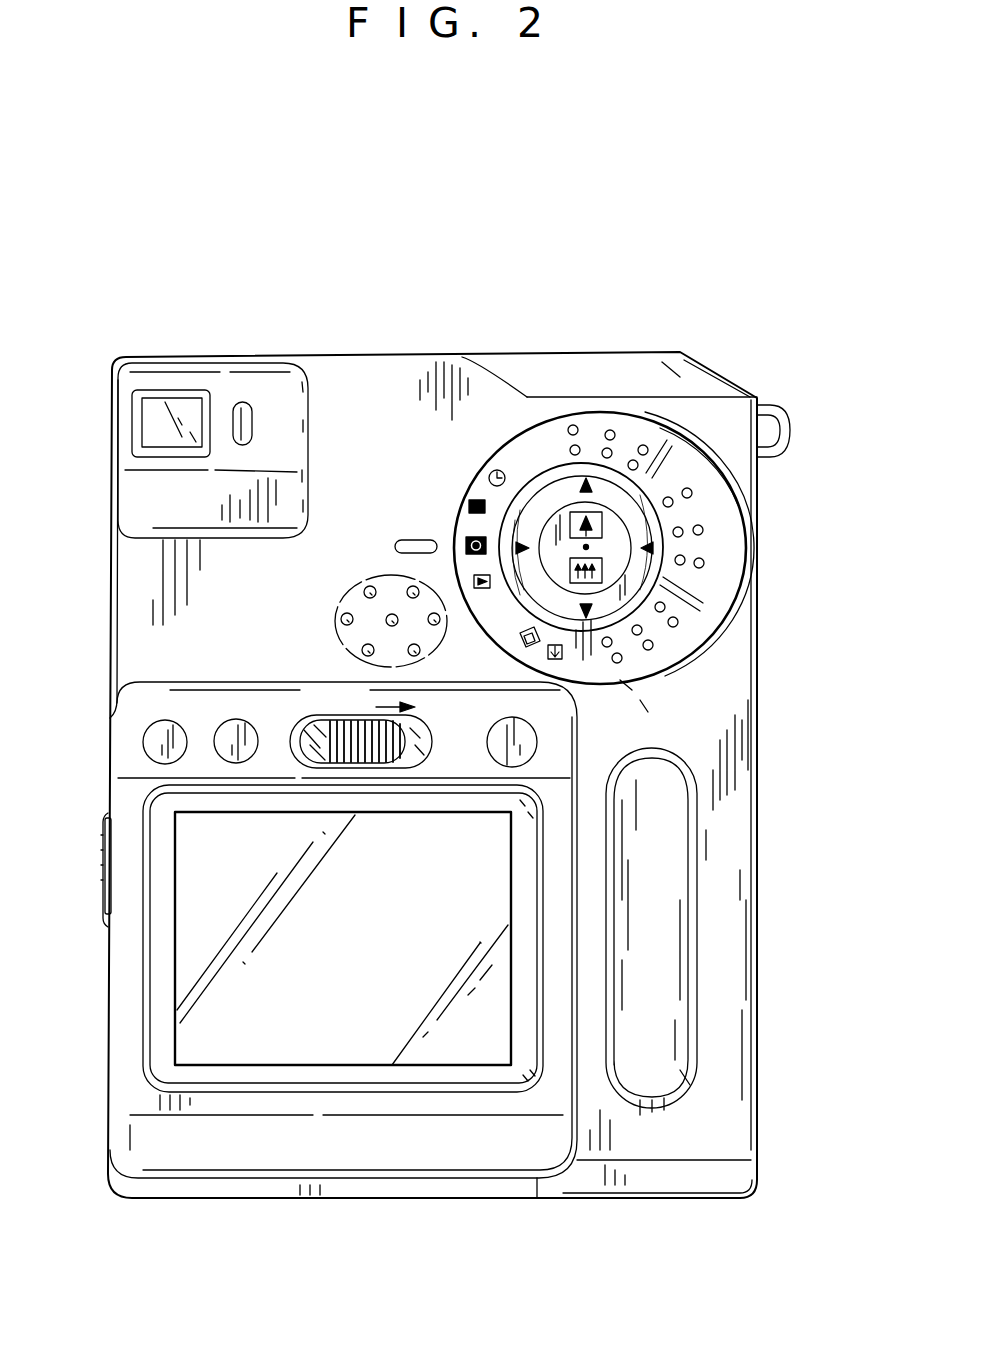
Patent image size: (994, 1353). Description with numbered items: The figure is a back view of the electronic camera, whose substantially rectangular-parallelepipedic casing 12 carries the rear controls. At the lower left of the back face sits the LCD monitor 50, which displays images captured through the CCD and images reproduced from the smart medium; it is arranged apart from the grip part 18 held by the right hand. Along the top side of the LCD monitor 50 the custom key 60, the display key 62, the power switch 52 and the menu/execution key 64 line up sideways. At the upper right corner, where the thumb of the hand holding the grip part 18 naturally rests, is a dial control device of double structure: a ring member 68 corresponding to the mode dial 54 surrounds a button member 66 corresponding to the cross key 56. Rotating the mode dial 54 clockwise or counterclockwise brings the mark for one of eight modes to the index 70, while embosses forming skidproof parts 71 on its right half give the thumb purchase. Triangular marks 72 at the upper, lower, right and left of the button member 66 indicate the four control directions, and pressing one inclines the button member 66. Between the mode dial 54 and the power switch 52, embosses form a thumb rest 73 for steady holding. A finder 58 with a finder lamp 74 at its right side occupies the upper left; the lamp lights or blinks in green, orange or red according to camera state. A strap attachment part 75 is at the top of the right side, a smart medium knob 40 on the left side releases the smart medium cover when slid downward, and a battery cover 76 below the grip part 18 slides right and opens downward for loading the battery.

The casing 12 is at (358, 388).
The grip part 18 is at (672, 920).
The smart medium knob 40 is at (103, 866).
The LCD monitor 50 is at (378, 1047).
The power switch 52 is at (301, 733).
The mode dial 54 is at (703, 598).
The cross key 56 is at (612, 603).
The finder 58 is at (152, 423).
The custom key 60 is at (152, 747).
The display key 62 is at (256, 732).
The menu/execution key 64 is at (523, 745).
The button member 66 is at (612, 527).
The ring member 68 is at (552, 438).
The index 70 is at (414, 541).
The skidproof parts 71 is at (700, 533).
The triangular marks 72 is at (589, 480).
The thumb rest 73 is at (360, 584).
The finder lamp 74 is at (243, 405).
The strap attachment part 75 is at (783, 455).
The battery cover 76 is at (688, 1186).